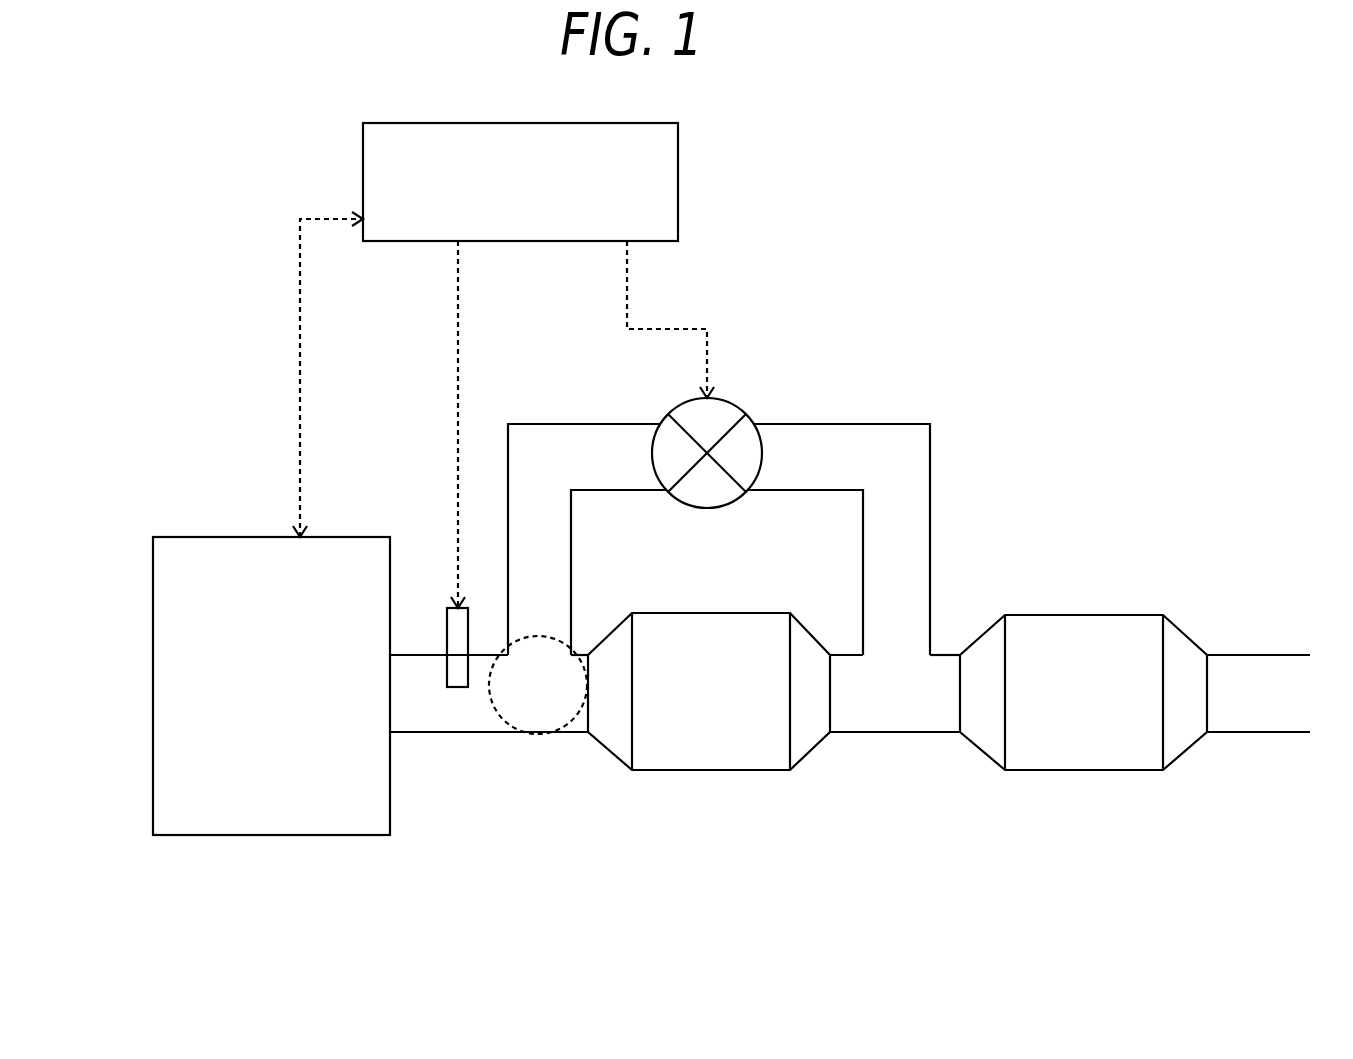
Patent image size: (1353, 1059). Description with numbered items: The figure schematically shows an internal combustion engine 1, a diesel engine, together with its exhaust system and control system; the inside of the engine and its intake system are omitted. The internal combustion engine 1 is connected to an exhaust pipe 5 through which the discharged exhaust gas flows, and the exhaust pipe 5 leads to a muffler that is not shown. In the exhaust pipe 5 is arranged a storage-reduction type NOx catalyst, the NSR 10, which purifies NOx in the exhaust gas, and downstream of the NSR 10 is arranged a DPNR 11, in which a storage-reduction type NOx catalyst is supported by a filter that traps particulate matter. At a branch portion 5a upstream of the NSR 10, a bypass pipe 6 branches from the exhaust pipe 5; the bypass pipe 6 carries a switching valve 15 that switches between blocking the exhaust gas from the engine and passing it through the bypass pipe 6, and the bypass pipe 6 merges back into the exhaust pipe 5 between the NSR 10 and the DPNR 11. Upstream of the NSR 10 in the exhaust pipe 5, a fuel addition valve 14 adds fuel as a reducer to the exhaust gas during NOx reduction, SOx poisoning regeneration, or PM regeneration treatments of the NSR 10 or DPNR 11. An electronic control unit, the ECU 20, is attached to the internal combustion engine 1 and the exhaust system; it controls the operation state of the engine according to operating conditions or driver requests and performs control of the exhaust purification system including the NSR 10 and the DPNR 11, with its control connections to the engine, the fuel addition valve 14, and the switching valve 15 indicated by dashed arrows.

The internal combustion engine 1 is at (262, 537).
The exhaust pipe 5 is at (418, 733).
The branch portion 5a is at (540, 736).
The bypass pipe 6 is at (578, 422).
The storage-reduction type NOx catalyst (NSR) 10 is at (692, 772).
The DPNR 11 is at (1083, 772).
The fuel addition valve 14 is at (447, 622).
The switching valve 15 is at (678, 496).
The electronic control unit (ECU) 20 is at (678, 172).